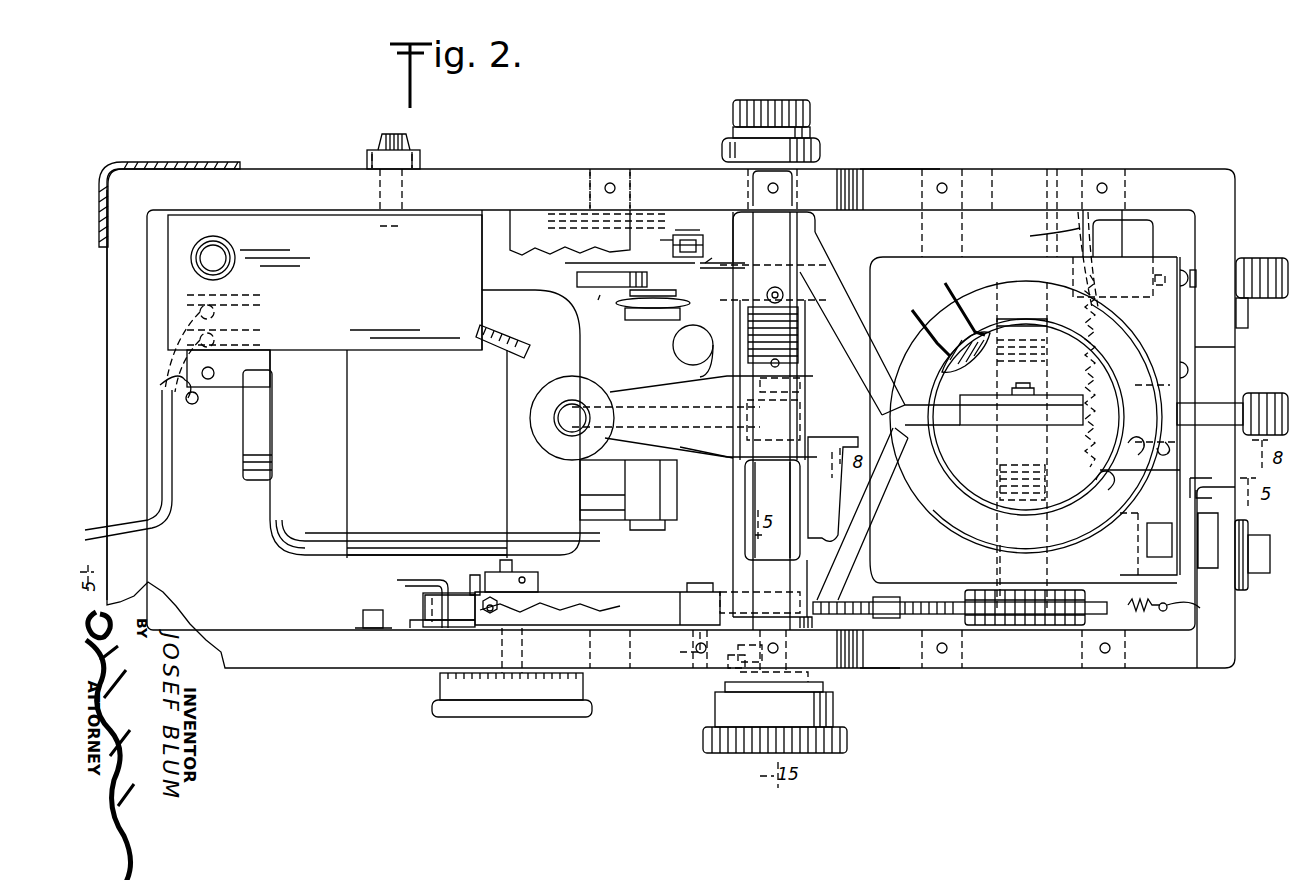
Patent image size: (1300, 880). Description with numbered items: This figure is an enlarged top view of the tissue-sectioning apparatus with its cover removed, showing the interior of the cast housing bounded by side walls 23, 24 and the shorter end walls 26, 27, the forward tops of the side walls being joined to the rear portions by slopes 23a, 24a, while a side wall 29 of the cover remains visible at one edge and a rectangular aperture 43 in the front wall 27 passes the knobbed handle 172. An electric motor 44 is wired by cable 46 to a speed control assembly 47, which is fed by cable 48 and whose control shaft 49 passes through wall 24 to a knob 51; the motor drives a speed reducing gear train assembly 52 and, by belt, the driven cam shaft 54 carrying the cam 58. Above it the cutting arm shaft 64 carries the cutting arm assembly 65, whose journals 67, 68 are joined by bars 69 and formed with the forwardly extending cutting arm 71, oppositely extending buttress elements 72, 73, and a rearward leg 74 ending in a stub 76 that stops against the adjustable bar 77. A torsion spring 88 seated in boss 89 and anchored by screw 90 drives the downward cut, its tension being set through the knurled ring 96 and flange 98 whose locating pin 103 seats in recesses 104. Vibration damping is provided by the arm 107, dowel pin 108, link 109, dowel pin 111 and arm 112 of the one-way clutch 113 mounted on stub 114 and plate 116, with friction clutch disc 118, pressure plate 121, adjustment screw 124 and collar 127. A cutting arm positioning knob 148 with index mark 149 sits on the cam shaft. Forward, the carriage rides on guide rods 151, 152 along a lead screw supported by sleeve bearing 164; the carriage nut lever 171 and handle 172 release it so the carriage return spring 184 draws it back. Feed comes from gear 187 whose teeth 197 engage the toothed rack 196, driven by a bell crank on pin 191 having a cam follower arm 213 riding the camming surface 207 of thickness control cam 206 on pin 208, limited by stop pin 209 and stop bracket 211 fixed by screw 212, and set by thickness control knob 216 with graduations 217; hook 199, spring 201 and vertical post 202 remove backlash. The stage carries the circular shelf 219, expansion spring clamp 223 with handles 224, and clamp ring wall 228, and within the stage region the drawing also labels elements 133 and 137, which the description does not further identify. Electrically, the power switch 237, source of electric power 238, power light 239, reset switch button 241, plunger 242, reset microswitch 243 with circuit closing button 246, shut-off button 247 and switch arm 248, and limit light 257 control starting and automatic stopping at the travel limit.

The side wall 23 is at (298, 655).
The slope 23a is at (865, 680).
The side wall 24 is at (305, 175).
The slope 24a is at (878, 168).
The rear end wall 26 is at (120, 305).
The front end wall 27 is at (1237, 602).
The side wall of cover 29 is at (156, 162).
The rectangular aperture 43 is at (1237, 355).
The electric motor 44 is at (403, 421).
The cable 46 is at (520, 350).
The speed control assembly 47 is at (396, 279).
The cable 48 is at (173, 497).
The control shaft 49 is at (376, 186).
The knob 51 is at (410, 138).
The speed reducing gear train assembly 52 is at (590, 517).
The driven cam shaft 54 is at (805, 390).
The cam 58 is at (740, 430).
The cutting arm shaft 64 is at (764, 497).
The cutting arm assembly 65 is at (723, 472).
The journal 67 is at (812, 236).
The central journal 68 is at (812, 478).
The bar 69 is at (745, 318).
The cutting arm 71 is at (985, 426).
The buttress element 72 is at (870, 530).
The buttress element 73 is at (841, 292).
The leg 74 is at (645, 395).
The stub 76 is at (557, 448).
The bar 77 is at (518, 233).
The torsion spring 88 is at (800, 350).
The boss 89 is at (800, 364).
The anchoring screw 90 is at (776, 287).
The knurled ring 96 is at (703, 742).
The flange 98 is at (773, 692).
The locating pin 103 is at (722, 686).
The recesses 104 is at (748, 662).
The arm 107 is at (722, 251).
The dowel pin 108 is at (688, 235).
The link 109 is at (718, 262).
The dowel pin 111 is at (672, 245).
The arm 112 is at (670, 238).
The one-way clutch 113 is at (555, 268).
The stub 114 is at (605, 174).
The circular plate 116 is at (550, 212).
The friction clutch disc 118 is at (682, 228).
The pressure plate 121 is at (576, 279).
The adjustment screw 124 is at (640, 296).
The collar 127 is at (600, 292).
The bar 133 is at (1058, 395).
The nut 137 is at (1025, 384).
The cutting arm positioning knob 148 is at (731, 113).
The index mark 149 is at (805, 150).
The support guide rod 151 is at (928, 238).
The support guide rod 152 is at (1107, 212).
The sleeve bearing 164 is at (1045, 476).
The carriage nut lever 171 is at (1185, 447).
The knobbed handle 172 is at (1210, 403).
The carriage return spring 184 is at (1095, 310).
The gear 187 is at (983, 590).
The pin 191 is at (690, 652).
The toothed rack 196 is at (830, 606).
The teeth 197 is at (992, 590).
The hook 199 is at (892, 597).
The spring 201 is at (1150, 616).
The vertical post 202 is at (1200, 606).
The thickness control cam 206 is at (442, 627).
The camming surface 207 is at (420, 622).
The pin 208 is at (521, 656).
The stop pin 209 is at (472, 574).
The stop bracket 211 is at (412, 571).
The screw 212 is at (365, 611).
The cam follower arm 213 is at (550, 596).
The thickness control knob 216 is at (435, 707).
The graduations 217 is at (500, 698).
The circular shelf 219 is at (946, 503).
The expansion spring clamp 223 is at (948, 346).
The handles 224 is at (912, 308).
The vertical wall 228 is at (962, 472).
The power switch 237 is at (1160, 523).
The source of electric power 238 is at (1272, 550).
The power light 239 is at (1250, 534).
The reset switch button 241 is at (1250, 304).
The plunger 242 is at (1198, 266).
The reset microswitch 243 is at (1145, 220).
The circuit closing button 246 is at (1163, 274).
The shut-off button 247 is at (1092, 268).
The switch arm 248 is at (1032, 236).
The limit light 257 is at (1252, 260).